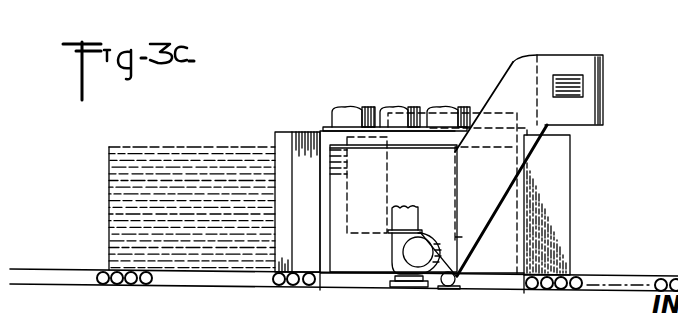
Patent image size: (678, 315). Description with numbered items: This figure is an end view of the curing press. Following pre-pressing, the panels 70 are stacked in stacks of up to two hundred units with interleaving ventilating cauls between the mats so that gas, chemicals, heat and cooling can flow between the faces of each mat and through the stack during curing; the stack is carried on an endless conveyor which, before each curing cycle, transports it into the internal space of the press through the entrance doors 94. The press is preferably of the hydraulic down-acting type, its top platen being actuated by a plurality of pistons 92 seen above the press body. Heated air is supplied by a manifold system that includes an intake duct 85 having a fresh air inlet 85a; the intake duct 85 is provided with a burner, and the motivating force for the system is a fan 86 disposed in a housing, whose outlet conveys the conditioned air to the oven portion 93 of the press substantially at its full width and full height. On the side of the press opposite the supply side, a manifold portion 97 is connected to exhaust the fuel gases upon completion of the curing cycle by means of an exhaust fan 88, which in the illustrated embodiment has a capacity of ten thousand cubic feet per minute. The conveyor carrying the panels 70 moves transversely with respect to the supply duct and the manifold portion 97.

The panels 70 is at (118, 183).
The entrance doors 94 is at (292, 132).
The manifold portion 97 is at (345, 252).
The oven portion 93 is at (412, 137).
The pistons 92 is at (393, 104).
The fan 86 is at (407, 110).
The exhaust fan 88 is at (398, 245).
The intake duct 85 is at (583, 67).
The fresh air inlet 85a is at (568, 75).